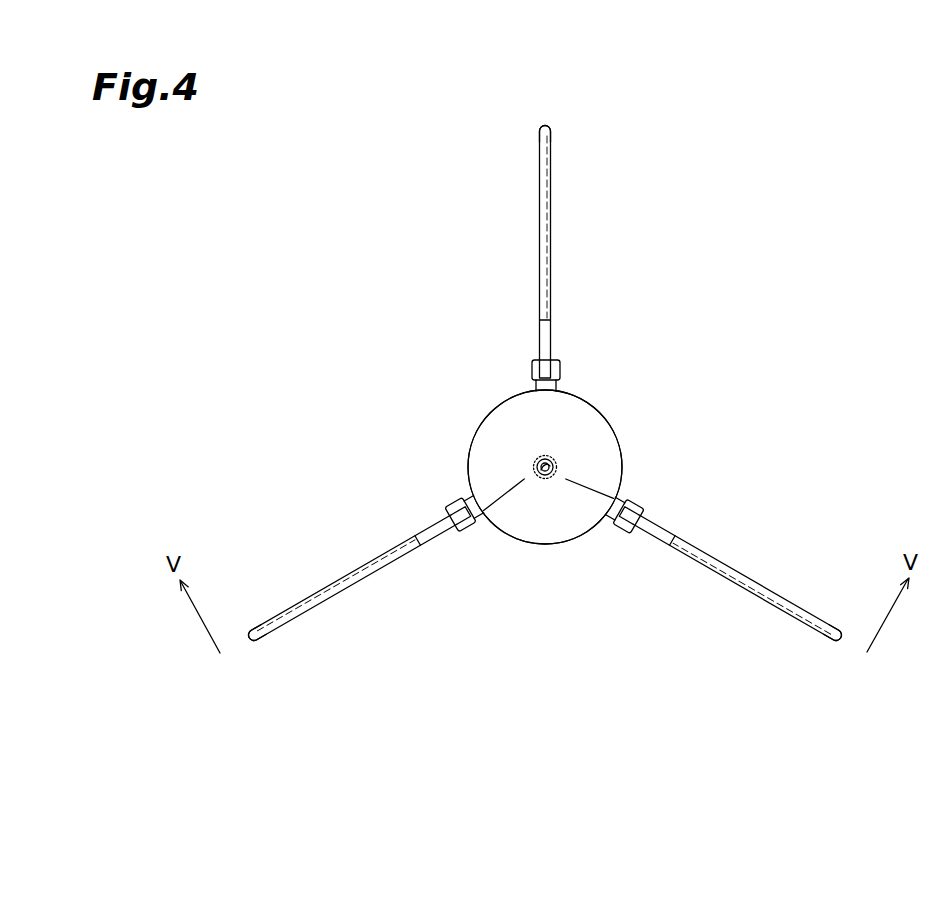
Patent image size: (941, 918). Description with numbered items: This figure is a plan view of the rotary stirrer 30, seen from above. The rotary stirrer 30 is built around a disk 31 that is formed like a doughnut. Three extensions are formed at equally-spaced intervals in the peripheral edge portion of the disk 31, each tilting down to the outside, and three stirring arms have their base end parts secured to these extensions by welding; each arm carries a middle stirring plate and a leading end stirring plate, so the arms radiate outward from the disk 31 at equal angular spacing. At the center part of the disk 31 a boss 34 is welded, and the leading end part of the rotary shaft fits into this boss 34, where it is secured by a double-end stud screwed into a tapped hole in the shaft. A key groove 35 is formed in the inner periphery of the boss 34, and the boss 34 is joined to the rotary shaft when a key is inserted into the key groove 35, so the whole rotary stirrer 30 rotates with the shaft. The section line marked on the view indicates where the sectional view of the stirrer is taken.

The rotary stirrer 30 is at (812, 124).
The disk 31 is at (607, 430).
The boss 34 is at (540, 458).
The key groove 35 is at (556, 465).